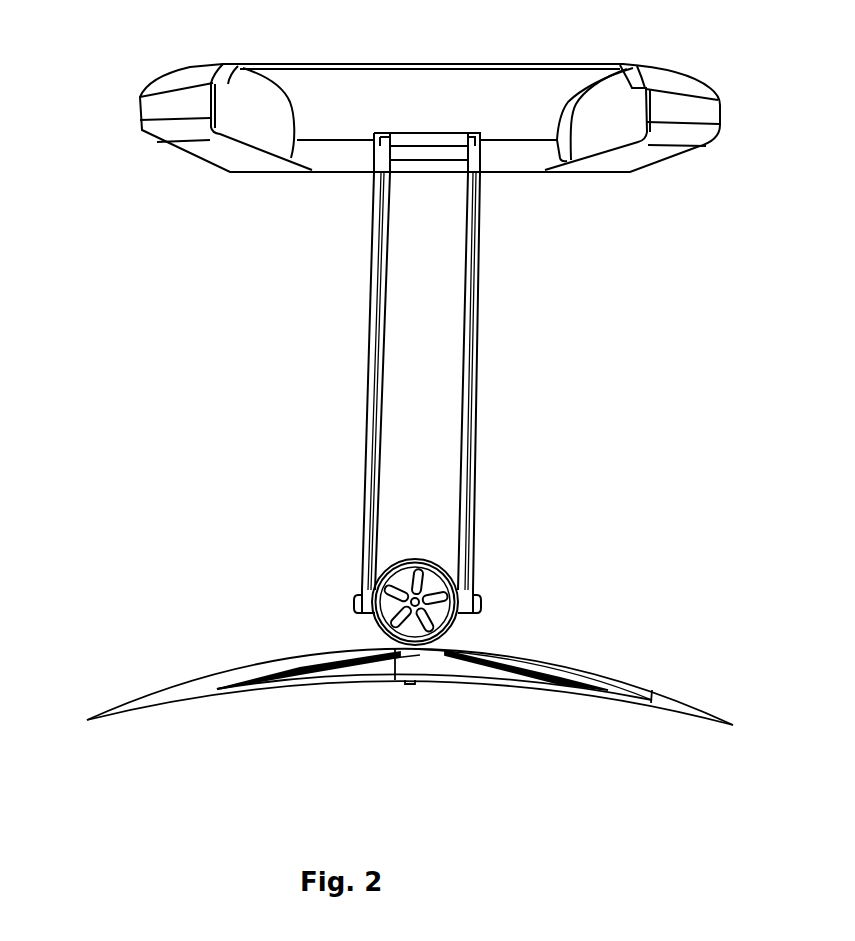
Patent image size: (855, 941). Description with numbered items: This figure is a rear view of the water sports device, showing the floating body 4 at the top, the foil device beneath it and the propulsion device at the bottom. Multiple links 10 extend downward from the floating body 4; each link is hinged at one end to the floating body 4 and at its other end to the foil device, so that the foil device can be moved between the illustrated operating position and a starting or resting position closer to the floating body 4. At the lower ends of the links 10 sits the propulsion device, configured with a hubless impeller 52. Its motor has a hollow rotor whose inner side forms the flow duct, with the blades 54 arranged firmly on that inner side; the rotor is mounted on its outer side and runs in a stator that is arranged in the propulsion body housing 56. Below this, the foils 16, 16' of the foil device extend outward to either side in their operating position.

The floating body 4 is at (538, 93).
The links 10 is at (373, 313).
The foil 16 is at (410, 651).
The foil 16' is at (574, 659).
The hubless impeller 52 is at (423, 618).
The blades 54 is at (398, 590).
The propulsion body housing 56 is at (440, 566).